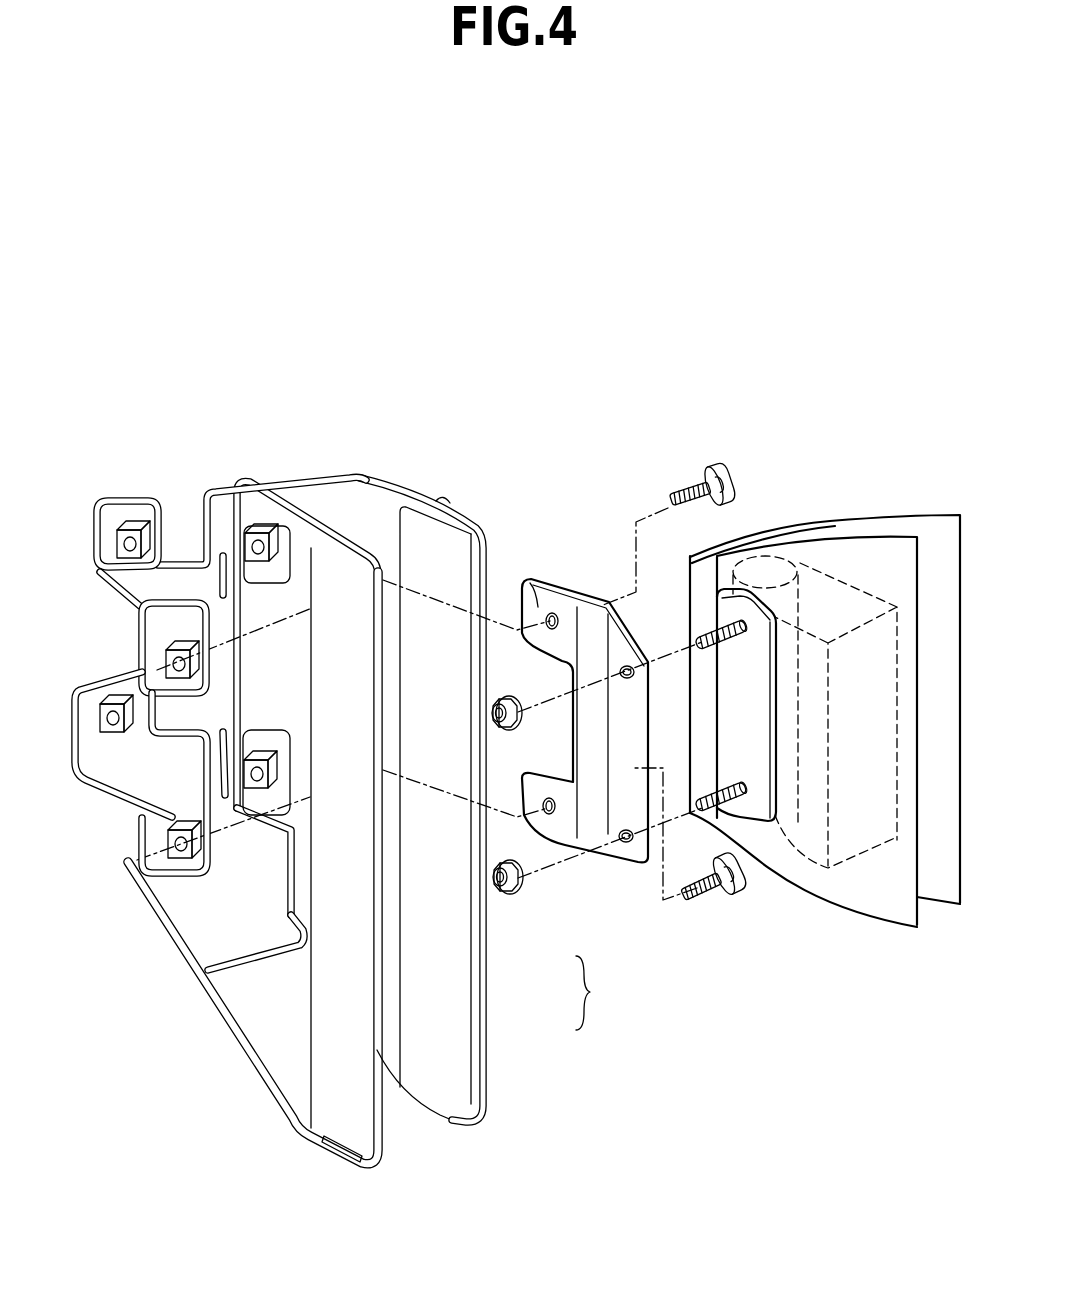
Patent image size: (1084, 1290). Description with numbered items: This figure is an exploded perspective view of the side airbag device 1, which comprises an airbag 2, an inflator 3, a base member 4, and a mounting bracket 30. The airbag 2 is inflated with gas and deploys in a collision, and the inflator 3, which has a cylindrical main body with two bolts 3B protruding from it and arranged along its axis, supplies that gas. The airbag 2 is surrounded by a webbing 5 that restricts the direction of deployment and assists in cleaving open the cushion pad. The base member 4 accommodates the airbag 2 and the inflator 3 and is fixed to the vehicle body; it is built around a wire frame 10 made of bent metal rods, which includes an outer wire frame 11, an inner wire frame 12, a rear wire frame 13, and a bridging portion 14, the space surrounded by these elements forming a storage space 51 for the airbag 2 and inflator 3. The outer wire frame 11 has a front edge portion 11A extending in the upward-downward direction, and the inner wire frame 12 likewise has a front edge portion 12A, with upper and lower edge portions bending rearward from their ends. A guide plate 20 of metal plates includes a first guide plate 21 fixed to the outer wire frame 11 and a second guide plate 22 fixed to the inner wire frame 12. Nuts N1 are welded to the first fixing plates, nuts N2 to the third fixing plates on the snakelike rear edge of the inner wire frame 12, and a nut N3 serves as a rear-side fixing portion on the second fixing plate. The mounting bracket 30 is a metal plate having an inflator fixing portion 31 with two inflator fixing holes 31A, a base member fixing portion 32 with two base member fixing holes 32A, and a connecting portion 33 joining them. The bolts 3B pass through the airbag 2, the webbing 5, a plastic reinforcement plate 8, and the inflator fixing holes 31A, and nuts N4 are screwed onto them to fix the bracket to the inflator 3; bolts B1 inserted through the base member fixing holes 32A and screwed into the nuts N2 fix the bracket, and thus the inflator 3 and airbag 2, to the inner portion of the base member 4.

The side airbag device 1 is at (256, 240).
The airbag 2 is at (848, 582).
The inflator 3 is at (739, 635).
The bolts 3B is at (708, 628).
The base member 4 is at (183, 430).
The webbing 5 is at (922, 515).
The plastic reinforcement plate 8 is at (722, 596).
The wire frame 10 is at (346, 777).
The outer wire frame 11 is at (470, 765).
The front edge portion 11A is at (484, 1040).
The inner wire frame 12 is at (350, 822).
The front edge portion 12A is at (378, 1050).
The rear wire frame 13 is at (74, 781).
The bridging portion 14 is at (302, 496).
The guide plate 20 is at (598, 993).
The first guide plate 21 is at (457, 948).
The second guide plate 22 is at (358, 990).
The mounting bracket 30 is at (578, 715).
The inflator fixing portion 31 is at (628, 742).
The inflator fixing holes 31A is at (627, 665).
The base member fixing portion 32 is at (538, 722).
The base member fixing holes 32A is at (556, 612).
The connecting portion 33 is at (590, 820).
The storage space 51 is at (436, 610).
The nut N1 is at (258, 560).
The nut N2 is at (172, 655).
The nut N3 is at (135, 528).
The nuts N4 is at (506, 697).
The bolts B1 is at (712, 472).